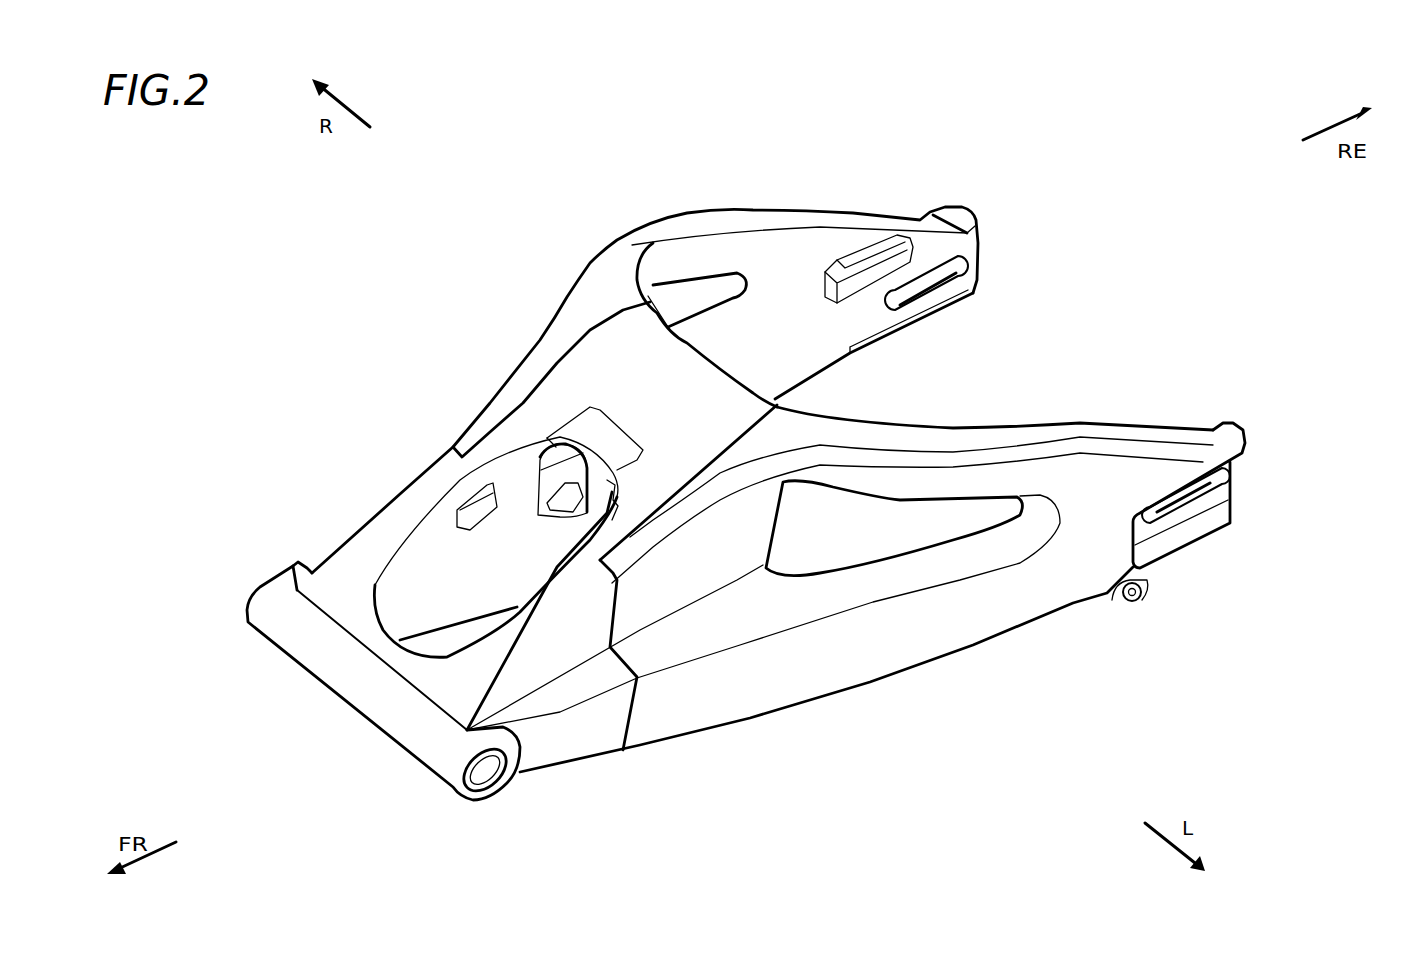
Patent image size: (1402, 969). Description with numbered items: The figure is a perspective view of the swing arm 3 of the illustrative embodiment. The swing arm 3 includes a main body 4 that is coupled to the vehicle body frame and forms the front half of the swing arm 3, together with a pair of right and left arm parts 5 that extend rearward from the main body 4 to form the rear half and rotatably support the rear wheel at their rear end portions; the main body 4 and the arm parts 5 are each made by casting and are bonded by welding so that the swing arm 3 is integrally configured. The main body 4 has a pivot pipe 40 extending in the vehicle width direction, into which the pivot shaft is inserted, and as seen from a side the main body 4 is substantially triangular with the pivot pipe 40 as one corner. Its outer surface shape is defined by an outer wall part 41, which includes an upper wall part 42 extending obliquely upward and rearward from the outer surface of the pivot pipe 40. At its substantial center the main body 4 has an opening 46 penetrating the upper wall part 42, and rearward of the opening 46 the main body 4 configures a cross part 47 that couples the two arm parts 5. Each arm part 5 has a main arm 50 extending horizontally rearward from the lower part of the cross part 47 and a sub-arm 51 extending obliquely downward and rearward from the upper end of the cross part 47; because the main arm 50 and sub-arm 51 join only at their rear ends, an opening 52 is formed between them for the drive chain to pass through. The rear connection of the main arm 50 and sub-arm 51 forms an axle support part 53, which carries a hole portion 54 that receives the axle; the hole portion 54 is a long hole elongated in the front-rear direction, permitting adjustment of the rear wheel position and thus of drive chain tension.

The swing arm 3 is at (222, 251).
The main body 4 is at (300, 345).
The arm part 5 is at (796, 132).
The pivot pipe 40 is at (357, 677).
The outer wall part 41 is at (370, 547).
The upper wall part 42 is at (762, 478).
The opening 46 is at (446, 548).
The cross part 47 is at (620, 390).
The main arm 50 is at (790, 362).
The sub-arm 51 is at (683, 232).
The opening 52 is at (730, 293).
The axle support part 53 is at (1003, 216).
The hole portion 54 is at (955, 293).